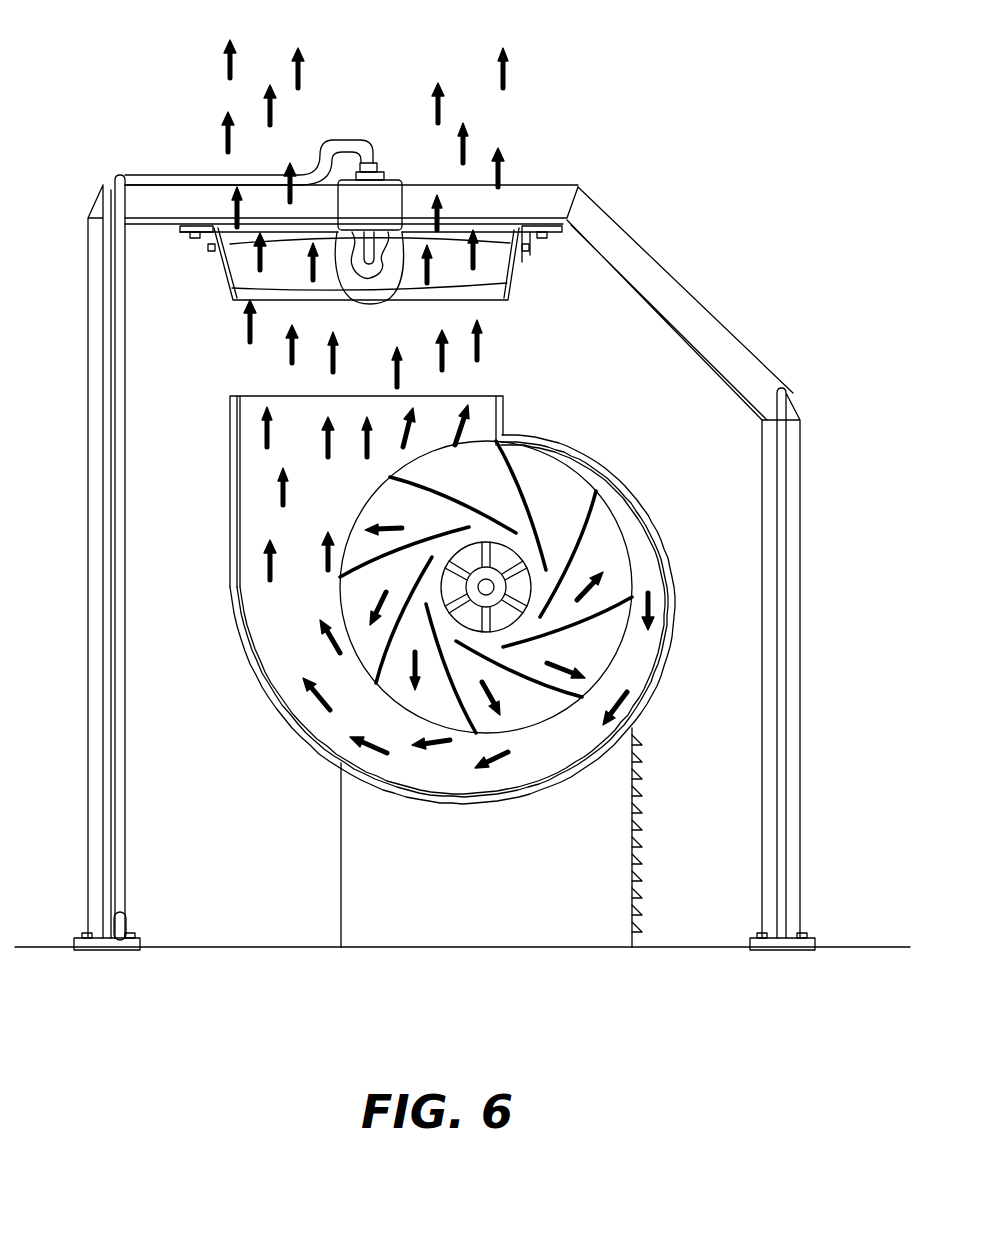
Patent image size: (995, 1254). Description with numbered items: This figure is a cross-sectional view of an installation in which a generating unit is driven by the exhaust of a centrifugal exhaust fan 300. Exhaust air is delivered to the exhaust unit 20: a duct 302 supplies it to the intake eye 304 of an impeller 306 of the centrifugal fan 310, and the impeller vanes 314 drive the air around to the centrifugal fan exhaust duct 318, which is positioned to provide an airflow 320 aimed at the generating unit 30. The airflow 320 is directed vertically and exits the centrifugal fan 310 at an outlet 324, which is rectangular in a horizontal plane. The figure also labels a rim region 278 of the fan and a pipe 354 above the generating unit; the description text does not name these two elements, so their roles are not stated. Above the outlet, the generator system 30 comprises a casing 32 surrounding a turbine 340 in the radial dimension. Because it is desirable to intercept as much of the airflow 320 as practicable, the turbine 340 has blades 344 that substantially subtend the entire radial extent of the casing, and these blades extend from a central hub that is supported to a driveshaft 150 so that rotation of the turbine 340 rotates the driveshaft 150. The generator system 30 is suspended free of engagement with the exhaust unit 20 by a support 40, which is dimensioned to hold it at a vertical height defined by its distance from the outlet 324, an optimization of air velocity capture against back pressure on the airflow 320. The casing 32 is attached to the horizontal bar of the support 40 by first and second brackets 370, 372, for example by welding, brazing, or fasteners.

The exhaust unit 20 is at (338, 902).
The generator system 30 is at (527, 273).
The casing 32 is at (224, 283).
The support 40 is at (752, 348).
The driveshaft 150 is at (370, 258).
The impeller rim 278 is at (597, 515).
The centrifugal exhaust fan 300 is at (660, 704).
The duct 302 is at (585, 843).
The intake eye 304 is at (520, 585).
The impeller 306 is at (515, 477).
The centrifugal fan 310 is at (648, 505).
The impeller vanes 314 is at (432, 468).
The centrifugal fan exhaust duct 318 is at (307, 662).
The airflow 320 is at (478, 366).
The outlet 324 is at (265, 396).
The turbine 340 is at (493, 258).
The blades 344 is at (470, 273).
The supply pipe 354 is at (333, 145).
The first bracket 370 is at (543, 228).
The second bracket 372 is at (197, 236).